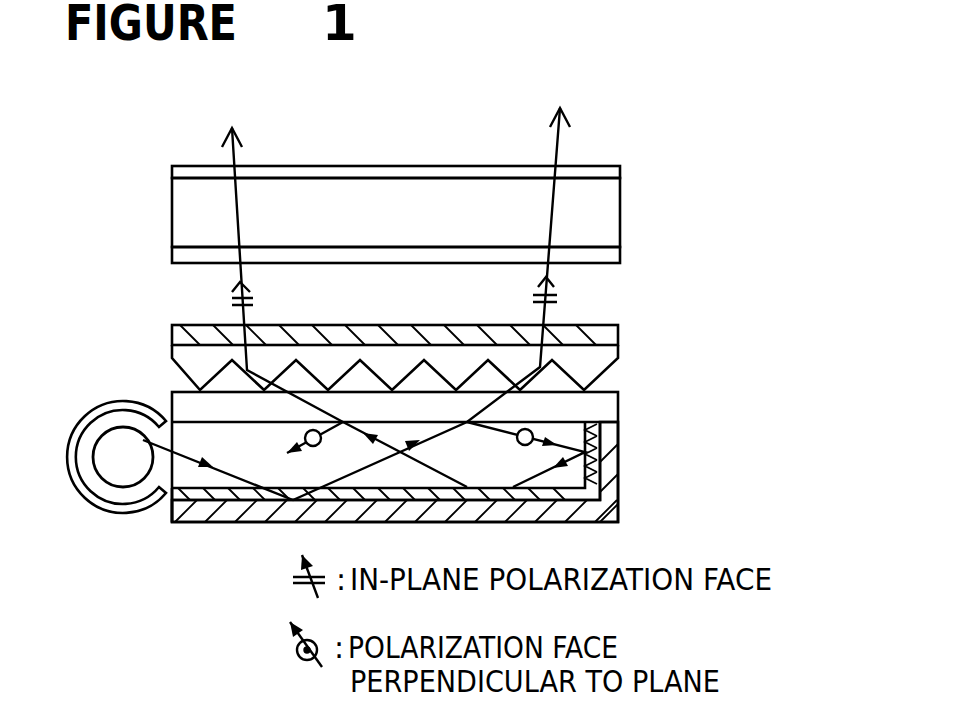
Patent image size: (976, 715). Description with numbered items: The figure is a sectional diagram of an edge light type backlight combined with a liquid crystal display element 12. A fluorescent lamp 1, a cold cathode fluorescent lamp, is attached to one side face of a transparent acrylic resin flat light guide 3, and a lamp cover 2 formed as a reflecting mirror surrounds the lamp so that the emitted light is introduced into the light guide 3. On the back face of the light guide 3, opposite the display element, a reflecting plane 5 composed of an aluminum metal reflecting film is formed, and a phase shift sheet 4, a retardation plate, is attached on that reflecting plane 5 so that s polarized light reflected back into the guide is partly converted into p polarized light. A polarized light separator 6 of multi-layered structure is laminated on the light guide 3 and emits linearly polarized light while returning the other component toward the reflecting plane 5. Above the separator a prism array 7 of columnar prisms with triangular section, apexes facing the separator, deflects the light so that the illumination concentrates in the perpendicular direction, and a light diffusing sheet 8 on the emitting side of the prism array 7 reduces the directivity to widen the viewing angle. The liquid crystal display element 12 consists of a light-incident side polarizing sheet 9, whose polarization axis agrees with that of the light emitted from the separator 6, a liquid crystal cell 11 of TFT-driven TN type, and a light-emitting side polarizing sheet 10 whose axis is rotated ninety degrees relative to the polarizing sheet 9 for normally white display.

The fluorescent lamp 1 is at (103, 465).
The lamp cover 2 is at (97, 505).
The light guide 3 is at (187, 477).
The phase shift sheet 4 is at (196, 494).
The reflecting plane 5 is at (232, 512).
The polarized light separator 6 is at (607, 410).
The prism array 7 is at (600, 362).
The light diffusing sheet 8 is at (610, 335).
The light-incident side polarizing sheet 9 is at (614, 255).
The light-emitting side polarizing sheet 10 is at (620, 165).
The liquid crystal cell 11 is at (607, 208).
The liquid crystal display element 12 is at (150, 162).